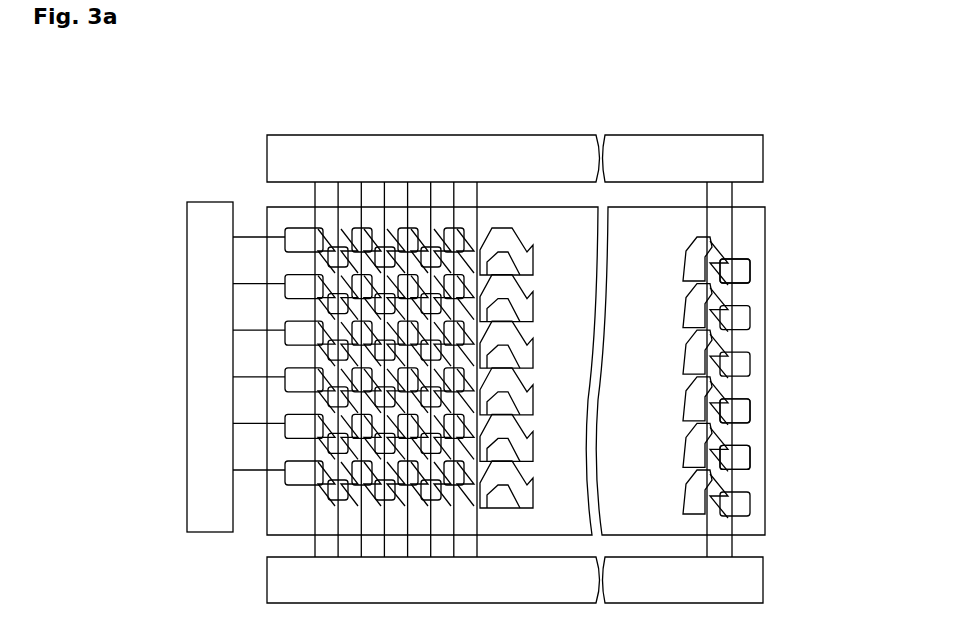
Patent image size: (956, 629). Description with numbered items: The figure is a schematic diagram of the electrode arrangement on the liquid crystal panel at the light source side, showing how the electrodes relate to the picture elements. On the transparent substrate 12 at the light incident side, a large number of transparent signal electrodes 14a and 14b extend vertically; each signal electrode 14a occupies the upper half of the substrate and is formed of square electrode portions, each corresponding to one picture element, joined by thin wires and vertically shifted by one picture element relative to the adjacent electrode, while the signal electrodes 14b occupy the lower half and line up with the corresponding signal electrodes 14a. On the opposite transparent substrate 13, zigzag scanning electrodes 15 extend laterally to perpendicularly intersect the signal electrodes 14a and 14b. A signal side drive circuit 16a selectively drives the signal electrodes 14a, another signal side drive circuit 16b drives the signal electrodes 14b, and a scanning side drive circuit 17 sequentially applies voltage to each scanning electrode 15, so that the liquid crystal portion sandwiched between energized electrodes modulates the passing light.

The transparent substrate 12 is at (765, 302).
The transparent substrate 13 is at (432, 371).
The signal electrode 14a is at (313, 237).
The signal electrode 14b is at (735, 458).
The scanning electrode 15 is at (293, 483).
The signal side drive circuit 16a is at (388, 134).
The signal side drive circuit 16b is at (267, 593).
The scanning side drive circuit 17 is at (208, 200).